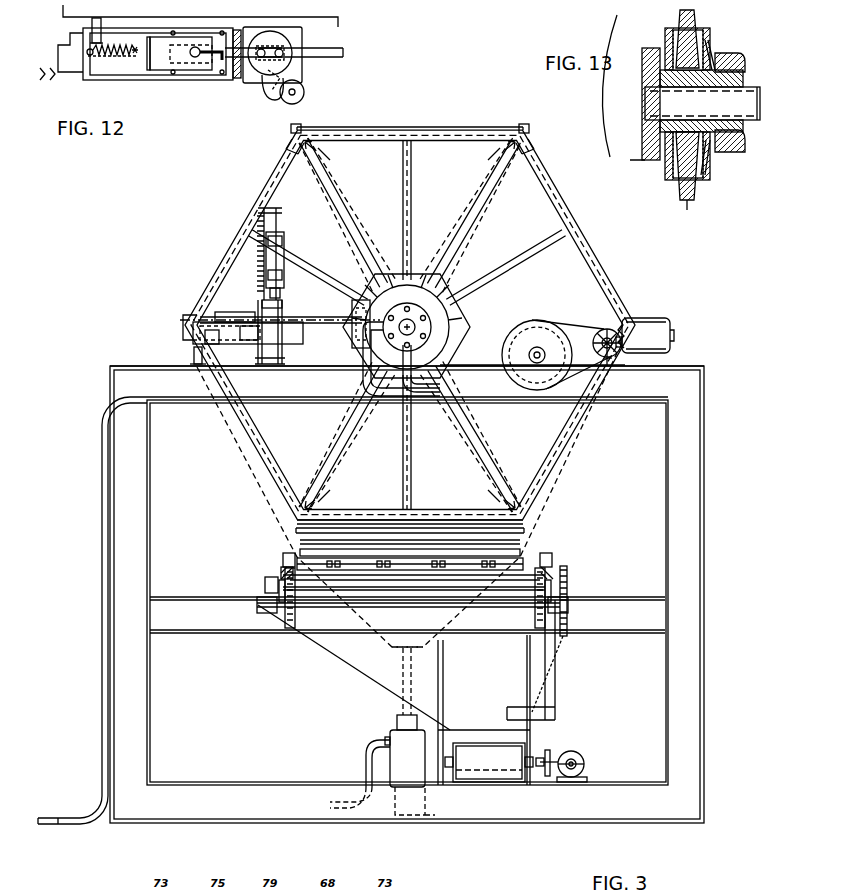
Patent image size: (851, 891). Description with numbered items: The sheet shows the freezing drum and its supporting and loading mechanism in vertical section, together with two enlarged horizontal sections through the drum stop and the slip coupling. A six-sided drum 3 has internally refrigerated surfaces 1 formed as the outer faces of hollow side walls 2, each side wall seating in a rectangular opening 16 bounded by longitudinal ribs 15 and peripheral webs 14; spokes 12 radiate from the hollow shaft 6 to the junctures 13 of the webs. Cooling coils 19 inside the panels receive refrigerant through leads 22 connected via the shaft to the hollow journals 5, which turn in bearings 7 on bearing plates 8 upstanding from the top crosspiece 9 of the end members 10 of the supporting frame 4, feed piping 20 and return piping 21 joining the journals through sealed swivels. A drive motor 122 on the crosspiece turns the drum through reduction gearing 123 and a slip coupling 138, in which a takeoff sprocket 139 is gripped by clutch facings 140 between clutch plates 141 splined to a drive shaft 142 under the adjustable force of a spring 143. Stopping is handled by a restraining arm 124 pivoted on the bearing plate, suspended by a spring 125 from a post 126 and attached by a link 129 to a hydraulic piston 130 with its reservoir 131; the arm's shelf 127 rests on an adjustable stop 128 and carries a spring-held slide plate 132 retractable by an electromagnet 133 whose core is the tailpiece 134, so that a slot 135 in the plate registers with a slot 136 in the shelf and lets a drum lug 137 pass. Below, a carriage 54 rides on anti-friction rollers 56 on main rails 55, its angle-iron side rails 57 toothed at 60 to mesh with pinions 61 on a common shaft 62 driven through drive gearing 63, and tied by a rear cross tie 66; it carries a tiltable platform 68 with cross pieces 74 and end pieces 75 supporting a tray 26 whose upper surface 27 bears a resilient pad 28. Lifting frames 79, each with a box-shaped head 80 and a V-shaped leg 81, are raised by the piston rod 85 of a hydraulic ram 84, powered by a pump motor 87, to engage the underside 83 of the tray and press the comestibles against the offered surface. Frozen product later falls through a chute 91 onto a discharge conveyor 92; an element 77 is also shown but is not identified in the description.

In FIG. 3, the internally refrigerated surface 1 is at (432, 128).
In FIG. 3, the side wall 2 is at (459, 128).
In FIG. 3, the drum 3 is at (490, 122).
In FIG. 3, the supporting frame 4 is at (708, 363).
In FIG. 3, the journal 5 is at (415, 313).
In FIG. 3, the shaft 6 is at (424, 318).
In FIG. 3, the bearing 7 is at (399, 318).
In FIG. 3, the bearing plate 8 is at (449, 330).
In FIG. 3, the top crosspiece 9 is at (483, 387).
In FIG. 3, the end member 10 is at (150, 550).
In FIG. 3, the spoke 12 is at (120, 200).
In FIG. 3, the juncture 13 is at (609, 440).
In FIG. 3, the peripheral web 14 is at (408, 110).
In FIG. 3, the rib 15 is at (293, 131).
In FIG. 3, the opening 16 is at (285, 150).
In FIG. 3, the cooling coil 19 is at (368, 131).
In FIG. 3, the feed piping 20 is at (378, 357).
In FIG. 3, the return piping 21 is at (413, 357).
In FIG. 3, the lead 22 is at (357, 215).
In FIG. 3, the tray 26 is at (527, 536).
In FIG. 3, the upper surface 27 is at (437, 525).
In FIG. 3, the pad 28 is at (300, 531).
In FIG. 3, the carriage 54 is at (275, 572).
In FIG. 3, the main rail 55 is at (258, 605).
In FIG. 3, the anti-friction roller 56 is at (266, 584).
In FIG. 3, the side rail 57 is at (552, 575).
In FIG. 3, the rack teeth 60 is at (296, 584).
In FIG. 3, the pinion 61 is at (296, 622).
In FIG. 3, the common shaft 62 is at (407, 610).
In FIG. 3, the drive gearing 63 is at (574, 577).
In FIG. 3, the rear cross tie 66 is at (404, 585).
In FIG. 3, the tiltable platform 68 is at (465, 583).
In FIG. 3, the cross piece 74 is at (349, 565).
In FIG. 3, the end piece 75 is at (402, 565).
In FIG. 3, the cross beam 77 is at (620, 623).
In FIG. 3, the lifting frame 79 is at (291, 552).
In FIG. 3, the head 80 is at (521, 552).
In FIG. 3, the V-shaped leg 81 is at (458, 610).
In FIG. 3, the underside 83 is at (452, 542).
In FIG. 3, the hydraulic ram 84 is at (415, 768).
In FIG. 3, the piston rod 85 is at (412, 672).
In FIG. 3, the electric drive motor 87 is at (576, 752).
In FIG. 3, the chute 91 is at (350, 677).
In FIG. 3, the discharge conveyor 92 is at (497, 766).
In FIG. 3, the drive motor 122 is at (648, 317).
In FIG. 3, the reduction gearing 123 is at (540, 313).
In FIG. 3, the restraining arm 124 is at (315, 305).
In FIG. 12, the restraining arm 124 is at (353, 56).
In FIG. 3, the spring 125 is at (281, 216).
In FIG. 12, the spring 125 is at (300, 45).
In FIG. 3, the post 126 is at (272, 342).
In FIG. 12, the post 126 is at (268, 96).
In FIG. 3, the shelf 127 is at (217, 338).
In FIG. 3, the adjustable stop 128 is at (196, 352).
In FIG. 3, the link 129 is at (276, 306).
In FIG. 12, the link 129 is at (266, 45).
In FIG. 3, the hydraulic piston 130 is at (276, 354).
In FIG. 12, the hydraulic piston 130 is at (285, 27).
In FIG. 3, the reservoir 131 is at (285, 248).
In FIG. 12, the reservoir 131 is at (305, 92).
In FIG. 3, the slide plate 132 is at (183, 326).
In FIG. 12, the slide plate 132 is at (57, 56).
In FIG. 3, the electromagnet 133 is at (241, 338).
In FIG. 12, the electromagnet 133 is at (200, 75).
In FIG. 3, the tailpiece 134 is at (232, 292).
In FIG. 12, the tailpiece 134 is at (157, 54).
In FIG. 12, the slot 135 is at (58, 22).
In FIG. 12, the slot 136 is at (101, 25).
In FIG. 3, the lug 137 is at (310, 138).
In FIG. 12, the lug 137 is at (108, 47).
In FIG. 3, the slip coupling 138 is at (622, 342).
In FIG. 13, the slip coupling 138 is at (752, 56).
In FIG. 3, the takeoff sprocket 139 is at (596, 347).
In FIG. 13, the takeoff sprocket 139 is at (689, 212).
In FIG. 13, the clutch facing 140 is at (680, 24).
In FIG. 13, the clutch plate 141 is at (668, 27).
In FIG. 3, the drive shaft 142 is at (622, 348).
In FIG. 13, the drive shaft 142 is at (762, 92).
In FIG. 13, the spring 143 is at (710, 172).